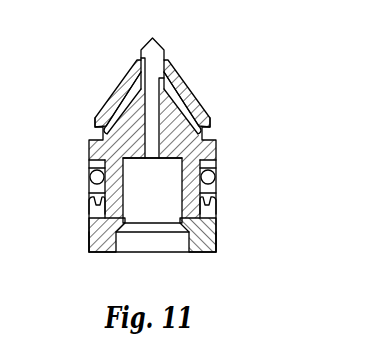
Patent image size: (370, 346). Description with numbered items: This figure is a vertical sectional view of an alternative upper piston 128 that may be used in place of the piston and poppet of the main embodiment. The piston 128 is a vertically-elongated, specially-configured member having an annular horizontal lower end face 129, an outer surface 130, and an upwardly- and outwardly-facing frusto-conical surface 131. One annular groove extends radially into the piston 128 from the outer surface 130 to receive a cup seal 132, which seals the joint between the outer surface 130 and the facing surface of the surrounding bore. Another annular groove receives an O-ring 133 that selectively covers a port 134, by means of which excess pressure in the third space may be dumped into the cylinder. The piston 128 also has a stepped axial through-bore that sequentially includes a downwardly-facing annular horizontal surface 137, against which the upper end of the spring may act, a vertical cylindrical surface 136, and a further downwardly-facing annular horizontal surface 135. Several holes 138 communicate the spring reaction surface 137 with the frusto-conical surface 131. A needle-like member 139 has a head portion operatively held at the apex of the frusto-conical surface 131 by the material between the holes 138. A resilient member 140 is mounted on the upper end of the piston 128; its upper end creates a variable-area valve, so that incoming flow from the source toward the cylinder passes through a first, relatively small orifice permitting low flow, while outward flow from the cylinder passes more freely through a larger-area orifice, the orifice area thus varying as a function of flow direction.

The piston 128 is at (243, 156).
The annular horizontal lower end face 129 is at (195, 254).
The outer surface 130 is at (219, 226).
The frusto-conical surface 131 is at (189, 99).
The cup seal 132 is at (86, 209).
The O-ring 133 is at (88, 179).
The port 134 is at (92, 160).
The downwardly-facing annular horizontal surface 135 is at (125, 244).
The vertical cylindrical surface 136 is at (132, 195).
The downwardly-facing annular horizontal surface 137 is at (177, 161).
The holes 138 is at (150, 94).
The needle-like member 139 is at (166, 42).
The resilient member 140 is at (110, 106).